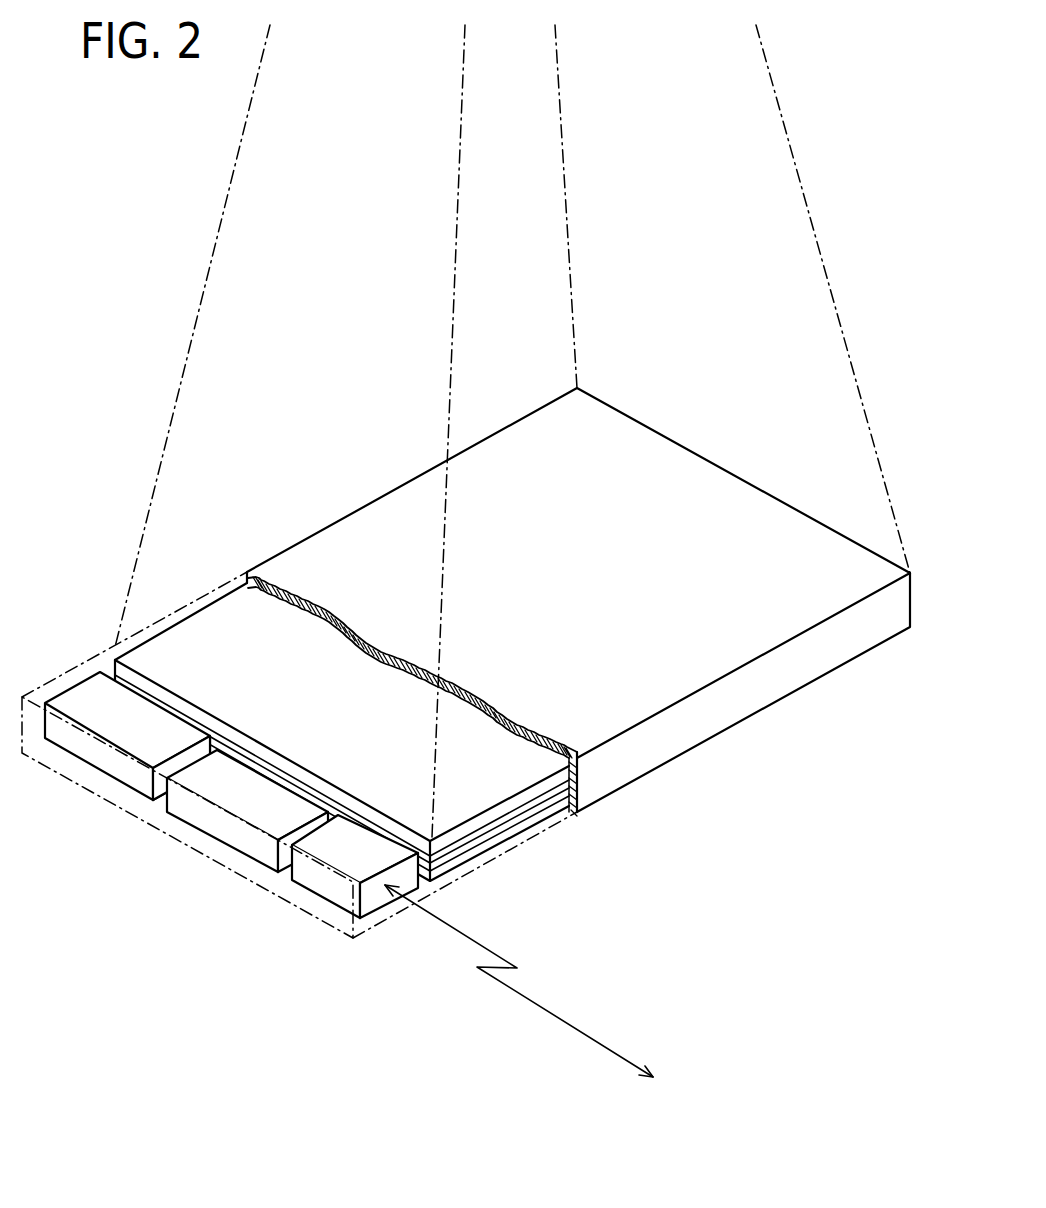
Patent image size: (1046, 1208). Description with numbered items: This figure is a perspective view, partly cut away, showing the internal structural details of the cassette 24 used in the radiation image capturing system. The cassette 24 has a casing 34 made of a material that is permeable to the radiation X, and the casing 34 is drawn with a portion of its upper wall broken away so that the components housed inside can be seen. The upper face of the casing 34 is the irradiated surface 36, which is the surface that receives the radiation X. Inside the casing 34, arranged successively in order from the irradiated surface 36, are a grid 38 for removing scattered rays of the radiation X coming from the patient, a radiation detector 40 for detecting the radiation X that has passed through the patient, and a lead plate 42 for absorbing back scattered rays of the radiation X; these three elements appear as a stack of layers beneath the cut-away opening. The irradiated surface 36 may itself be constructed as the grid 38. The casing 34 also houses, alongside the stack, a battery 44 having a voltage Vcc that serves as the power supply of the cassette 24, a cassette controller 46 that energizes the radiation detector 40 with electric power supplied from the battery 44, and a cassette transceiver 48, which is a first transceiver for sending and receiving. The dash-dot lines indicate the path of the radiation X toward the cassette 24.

The cassette 24 is at (512, 639).
The casing 34 is at (693, 722).
The irradiated surface 36 is at (697, 480).
The grid 38 is at (487, 728).
The radiation detector 40 is at (517, 808).
The lead plate 42 is at (495, 840).
The battery 44 is at (80, 748).
The cassette controller 46 is at (207, 818).
The cassette transceiver 48 is at (330, 888).
The radiation X is at (195, 318).